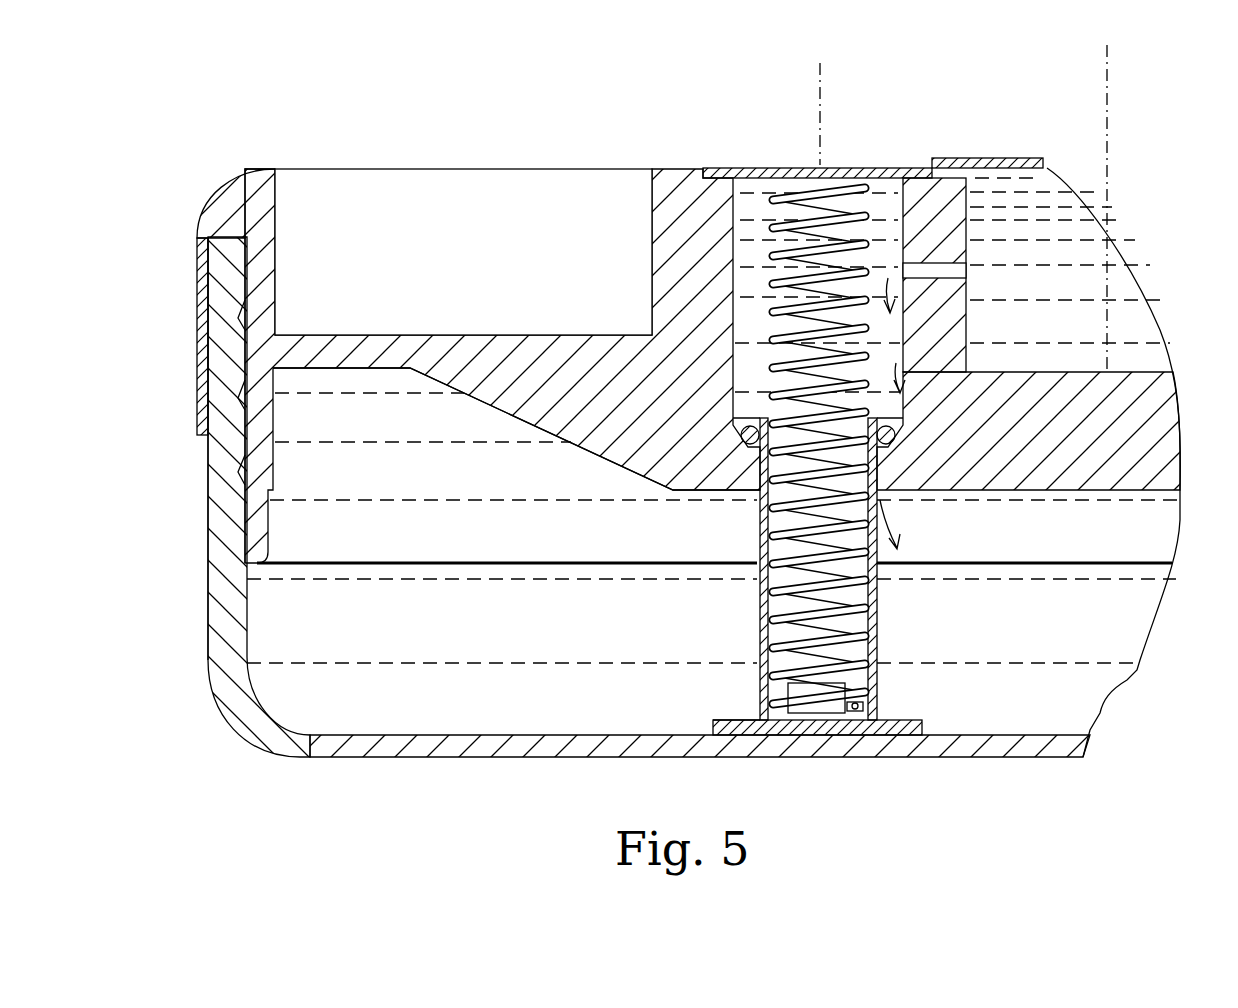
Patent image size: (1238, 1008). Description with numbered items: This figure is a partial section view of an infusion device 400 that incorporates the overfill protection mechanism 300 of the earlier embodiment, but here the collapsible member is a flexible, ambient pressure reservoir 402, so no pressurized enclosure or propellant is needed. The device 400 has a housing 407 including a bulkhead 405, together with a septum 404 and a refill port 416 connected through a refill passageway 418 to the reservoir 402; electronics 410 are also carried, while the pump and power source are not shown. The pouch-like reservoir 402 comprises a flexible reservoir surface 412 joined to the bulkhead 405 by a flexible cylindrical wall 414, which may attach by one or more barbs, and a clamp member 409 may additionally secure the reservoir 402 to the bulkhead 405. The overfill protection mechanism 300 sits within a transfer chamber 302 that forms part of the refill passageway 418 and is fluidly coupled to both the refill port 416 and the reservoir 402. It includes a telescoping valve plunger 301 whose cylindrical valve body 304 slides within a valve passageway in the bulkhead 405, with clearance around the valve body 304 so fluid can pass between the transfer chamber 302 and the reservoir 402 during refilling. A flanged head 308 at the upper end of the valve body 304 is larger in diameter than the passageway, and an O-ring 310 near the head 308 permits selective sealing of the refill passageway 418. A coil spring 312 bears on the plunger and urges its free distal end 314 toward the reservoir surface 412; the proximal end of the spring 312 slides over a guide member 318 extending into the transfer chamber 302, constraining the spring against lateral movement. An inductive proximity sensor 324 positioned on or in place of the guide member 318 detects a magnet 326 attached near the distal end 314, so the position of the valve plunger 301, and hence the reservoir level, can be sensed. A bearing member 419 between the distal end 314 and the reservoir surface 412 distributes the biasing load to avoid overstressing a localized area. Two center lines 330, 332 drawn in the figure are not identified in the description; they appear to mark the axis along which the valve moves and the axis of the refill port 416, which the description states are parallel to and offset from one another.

The overfill protection mechanism 300 is at (755, 632).
The telescoping valve plunger 301 is at (879, 604).
The transfer chamber 302 is at (885, 200).
The cylindrical valve body 304 is at (759, 598).
The head 308 is at (902, 418).
The O-ring 310 is at (745, 445).
The coil spring 312 is at (800, 198).
The free distal end 314 is at (882, 718).
The guide member 318 is at (763, 330).
The inductive proximity sensor 324 is at (765, 414).
The magnet 326 is at (823, 706).
The center axis 330 is at (822, 78).
The center axis 332 is at (1103, 78).
The infusion device 400 is at (664, 166).
The flexible ambient pressure reservoir 402 is at (210, 633).
The septum 404 is at (1000, 158).
The bulkhead 405 is at (473, 336).
The housing 407 is at (222, 184).
The clamp member 409 is at (204, 378).
The electronics 410 is at (420, 186).
The flexible reservoir surface 412 is at (518, 718).
The flexible cylindrical wall 414 is at (210, 505).
The refill port 416 is at (1043, 205).
The refill passageway 418 is at (968, 274).
The bearing member 419 is at (738, 720).